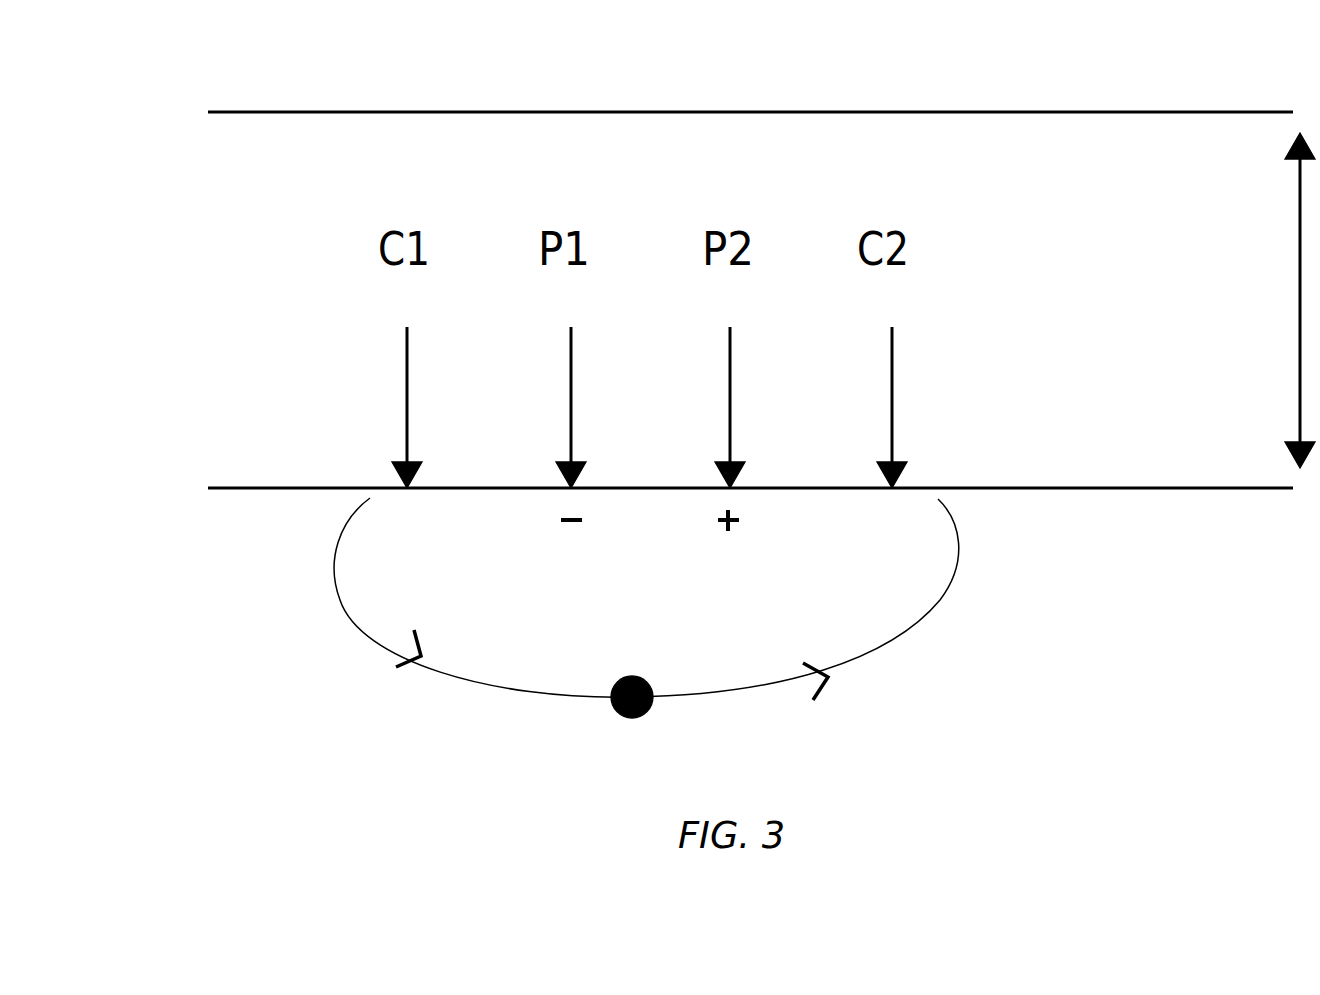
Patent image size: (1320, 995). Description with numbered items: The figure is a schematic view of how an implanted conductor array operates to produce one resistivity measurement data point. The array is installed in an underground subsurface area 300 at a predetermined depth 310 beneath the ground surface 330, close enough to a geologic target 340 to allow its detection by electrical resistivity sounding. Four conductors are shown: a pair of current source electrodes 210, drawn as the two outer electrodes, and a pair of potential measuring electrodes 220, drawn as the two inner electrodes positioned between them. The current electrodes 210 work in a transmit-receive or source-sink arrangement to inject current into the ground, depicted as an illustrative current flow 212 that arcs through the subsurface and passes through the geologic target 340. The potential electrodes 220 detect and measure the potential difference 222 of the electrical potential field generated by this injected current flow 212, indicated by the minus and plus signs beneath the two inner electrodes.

The subsurface area 300 is at (212, 293).
The ground surface 330 is at (1099, 112).
The predetermined depth 310 is at (1298, 273).
The current source electrodes 210 is at (406, 362).
The potential measuring electrodes 220 is at (570, 362).
The potential difference 222 is at (571, 525).
The current flow 212 is at (903, 648).
The geologic target 340 is at (639, 716).